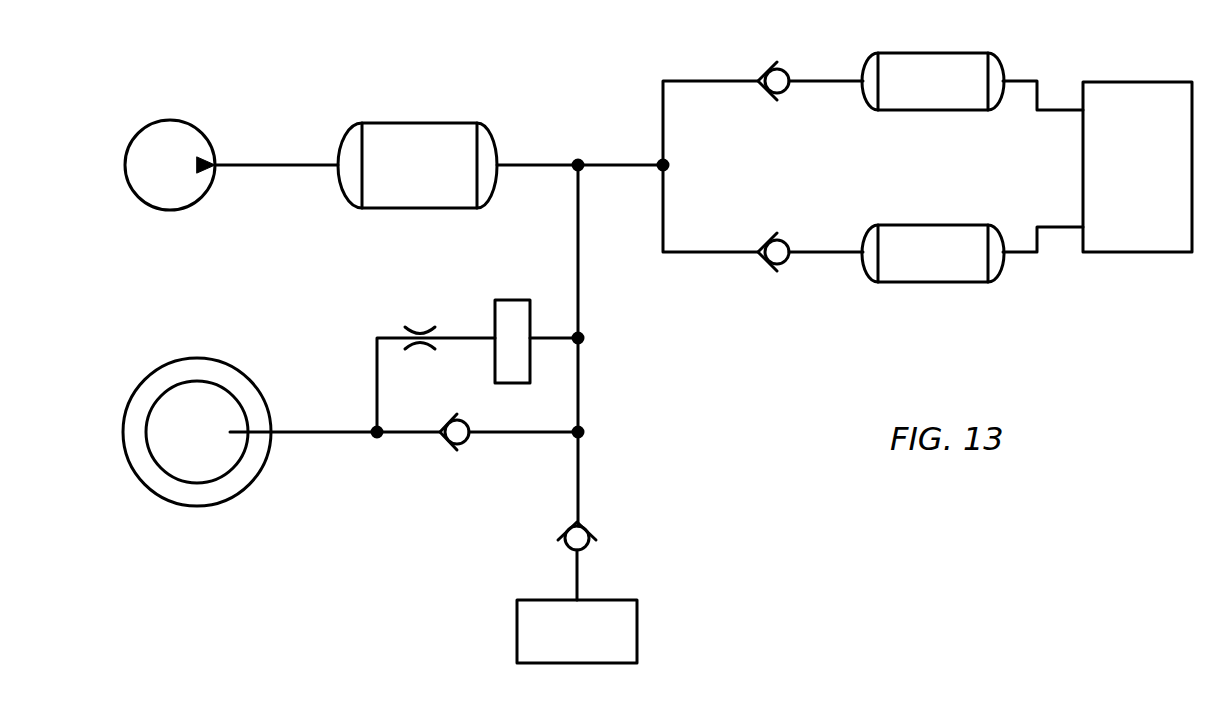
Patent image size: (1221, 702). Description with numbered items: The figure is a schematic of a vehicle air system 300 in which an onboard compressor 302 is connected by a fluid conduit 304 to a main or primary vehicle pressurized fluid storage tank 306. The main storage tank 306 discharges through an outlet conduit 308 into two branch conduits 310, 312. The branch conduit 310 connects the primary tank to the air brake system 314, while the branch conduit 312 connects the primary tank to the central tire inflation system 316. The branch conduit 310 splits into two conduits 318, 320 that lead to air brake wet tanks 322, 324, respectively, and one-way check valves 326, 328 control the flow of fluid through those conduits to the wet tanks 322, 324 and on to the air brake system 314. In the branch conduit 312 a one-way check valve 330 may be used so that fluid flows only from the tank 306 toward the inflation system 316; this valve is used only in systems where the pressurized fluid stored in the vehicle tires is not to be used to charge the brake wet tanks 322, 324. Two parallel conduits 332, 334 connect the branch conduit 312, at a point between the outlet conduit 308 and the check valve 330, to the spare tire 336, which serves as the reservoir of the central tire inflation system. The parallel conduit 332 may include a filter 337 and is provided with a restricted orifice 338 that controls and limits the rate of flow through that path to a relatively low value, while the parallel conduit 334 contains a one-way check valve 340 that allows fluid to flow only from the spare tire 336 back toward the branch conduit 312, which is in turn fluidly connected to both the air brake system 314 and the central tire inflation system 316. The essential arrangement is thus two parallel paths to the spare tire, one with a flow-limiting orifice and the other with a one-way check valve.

The vehicle air system 300 is at (677, 360).
The onboard compressor 302 is at (170, 120).
The fluid conduit 304 is at (305, 165).
The main pressurized fluid storage tank 306 is at (440, 123).
The outlet conduit 308 is at (560, 131).
The branch conduit 310 is at (645, 131).
The branch conduit 312 is at (578, 280).
The air brake system 314 is at (1127, 72).
The central tire inflation system 316 is at (639, 631).
The conduit 318 is at (712, 81).
The conduit 320 is at (700, 252).
The air brake wet tank 322 is at (935, 53).
The air brake wet tank 324 is at (920, 282).
The one-way check valve 326 is at (764, 70).
The one-way check valve 328 is at (768, 266).
The one-way check valve 330 is at (590, 524).
The parallel conduit 332 is at (460, 340).
The parallel conduit 334 is at (540, 434).
The spare tire 336 is at (187, 356).
The filter 337 is at (510, 300).
The restricted orifice 338 is at (420, 324).
The one-way check valve 340 is at (442, 446).